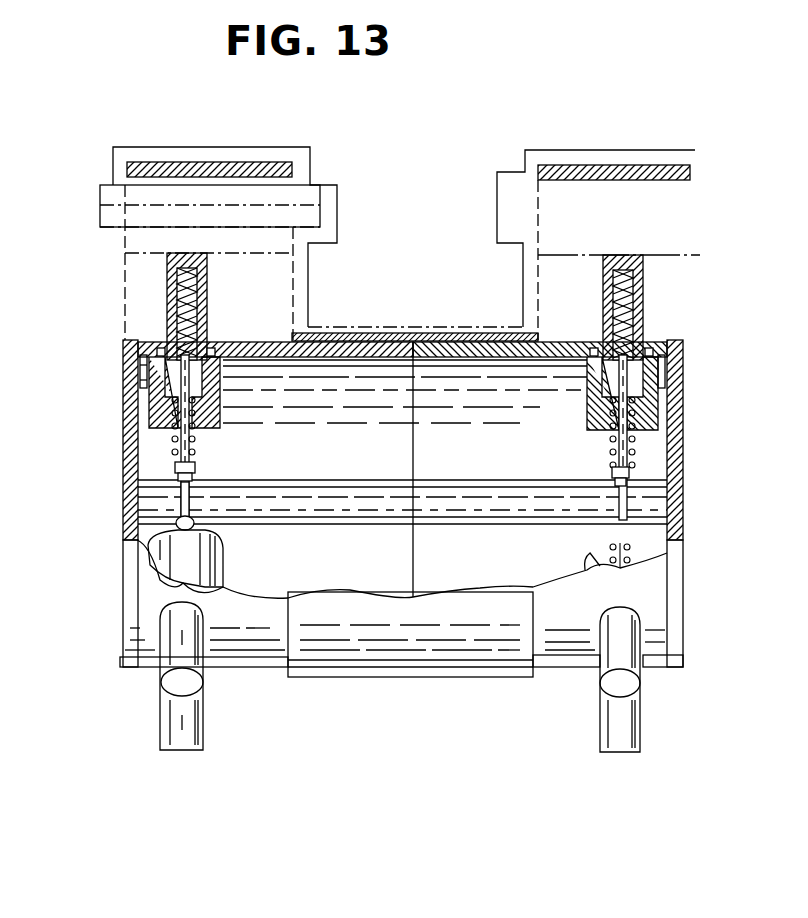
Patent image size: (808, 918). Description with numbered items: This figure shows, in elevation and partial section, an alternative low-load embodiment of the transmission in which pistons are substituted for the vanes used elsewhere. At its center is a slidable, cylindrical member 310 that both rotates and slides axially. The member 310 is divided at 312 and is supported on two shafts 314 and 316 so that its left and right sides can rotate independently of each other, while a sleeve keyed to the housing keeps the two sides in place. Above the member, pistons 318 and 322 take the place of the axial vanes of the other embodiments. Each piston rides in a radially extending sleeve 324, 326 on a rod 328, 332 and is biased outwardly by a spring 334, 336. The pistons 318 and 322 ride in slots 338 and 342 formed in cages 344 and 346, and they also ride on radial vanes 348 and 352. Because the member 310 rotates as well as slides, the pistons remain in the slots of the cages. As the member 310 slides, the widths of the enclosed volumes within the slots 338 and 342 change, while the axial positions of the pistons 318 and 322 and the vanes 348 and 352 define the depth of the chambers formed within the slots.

The slidable cylindrical member 310 is at (686, 384).
The division 312 is at (413, 450).
The shaft 314 is at (267, 522).
The shaft 316 is at (450, 522).
The piston 318 is at (207, 326).
The piston 322 is at (643, 316).
The radial extending sleeve 324 is at (223, 410).
The radial extending sleeve 326 is at (587, 413).
The rod 328 is at (190, 453).
The rod 332 is at (613, 460).
The spring 334 is at (175, 452).
The spring 336 is at (632, 453).
The slot 338 is at (262, 284).
The slot 342 is at (590, 286).
The cage 344 is at (205, 162).
The cage 346 is at (622, 165).
The radial vane 348 is at (143, 253).
The radial vane 352 is at (670, 257).